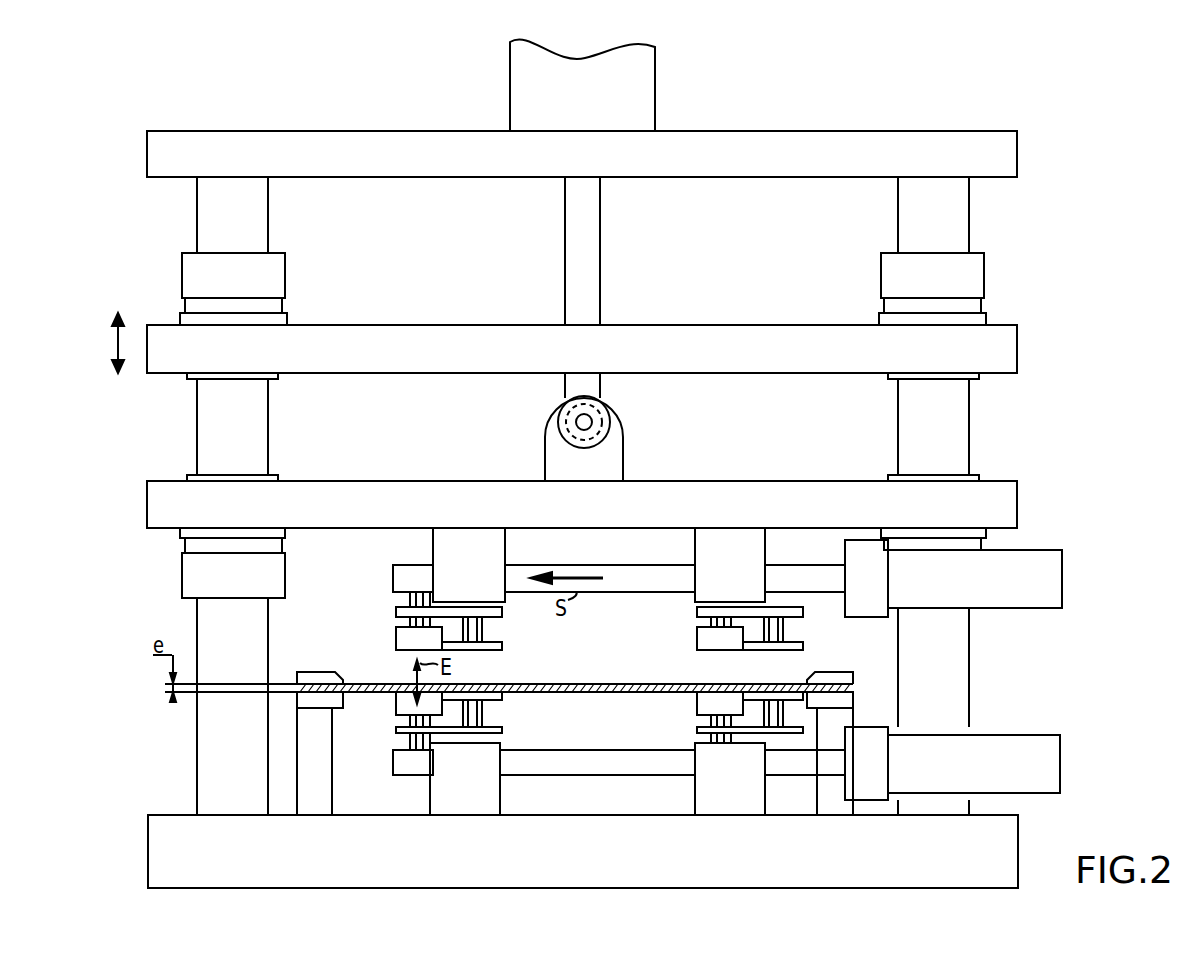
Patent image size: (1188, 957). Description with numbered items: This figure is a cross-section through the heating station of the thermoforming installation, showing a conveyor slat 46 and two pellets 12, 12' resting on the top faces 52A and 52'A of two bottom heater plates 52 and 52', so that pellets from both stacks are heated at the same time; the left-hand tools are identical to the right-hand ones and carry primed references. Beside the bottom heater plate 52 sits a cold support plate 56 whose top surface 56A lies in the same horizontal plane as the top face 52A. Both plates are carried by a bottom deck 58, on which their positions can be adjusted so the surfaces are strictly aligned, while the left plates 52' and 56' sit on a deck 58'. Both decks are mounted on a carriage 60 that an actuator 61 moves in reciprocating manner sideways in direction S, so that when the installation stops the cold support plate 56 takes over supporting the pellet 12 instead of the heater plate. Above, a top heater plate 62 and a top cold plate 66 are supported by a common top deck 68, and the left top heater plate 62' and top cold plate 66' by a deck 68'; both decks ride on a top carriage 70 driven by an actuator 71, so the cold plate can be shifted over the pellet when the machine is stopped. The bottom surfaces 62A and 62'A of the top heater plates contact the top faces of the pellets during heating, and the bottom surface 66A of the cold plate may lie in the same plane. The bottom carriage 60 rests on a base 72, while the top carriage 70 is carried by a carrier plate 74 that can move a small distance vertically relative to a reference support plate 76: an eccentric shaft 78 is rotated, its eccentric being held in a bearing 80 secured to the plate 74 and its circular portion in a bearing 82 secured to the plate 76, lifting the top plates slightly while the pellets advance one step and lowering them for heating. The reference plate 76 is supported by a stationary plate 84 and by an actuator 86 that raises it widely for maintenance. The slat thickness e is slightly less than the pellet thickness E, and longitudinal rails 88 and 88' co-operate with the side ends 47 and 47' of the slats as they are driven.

The pellet 12 is at (695, 696).
The pellet 12' is at (463, 755).
The slat 46 is at (535, 683).
The side end of the slat 47 is at (874, 753).
The side end of the slat 47' is at (282, 753).
The bottom heater plate 52 is at (730, 760).
The bottom heater plate 52' is at (443, 742).
The top face of the bottom heater plate 52A is at (725, 687).
The top face of the bottom heater plate 52'A is at (408, 747).
The cold support plate 56 is at (819, 736).
The cold support plate 56' is at (504, 711).
The top surface of the cold support plate 56A is at (757, 692).
The bottom deck 58 is at (725, 735).
The bottom deck 58' is at (481, 768).
The carriage 60 is at (596, 760).
The actuator 61 is at (1050, 765).
The top heater plate 62 is at (690, 633).
The top heater plate 62' is at (423, 620).
The bottom surface of the top heater plate 62A is at (712, 650).
The bottom surface of the top heater plate 62'A is at (388, 641).
The top cold plate 66 is at (764, 585).
The top cold plate 66' is at (469, 586).
The bottom surface of the top cold plate 66A is at (797, 651).
The top deck 68 is at (727, 607).
The top deck 68' is at (441, 576).
The carriage 70 is at (576, 572).
The actuator 71 is at (1050, 583).
The base 72 is at (157, 853).
The carrier plate or beam 74 is at (1015, 507).
The reference support plate or beam 76 is at (1012, 356).
The eccentric shaft 78 is at (604, 413).
The bearing 80 is at (624, 449).
The bearing 82 is at (565, 392).
The stationary plate 84 is at (781, 150).
The actuator 86 is at (585, 213).
The longitudinal rail 88 is at (874, 669).
The longitudinal rail 88' is at (310, 655).